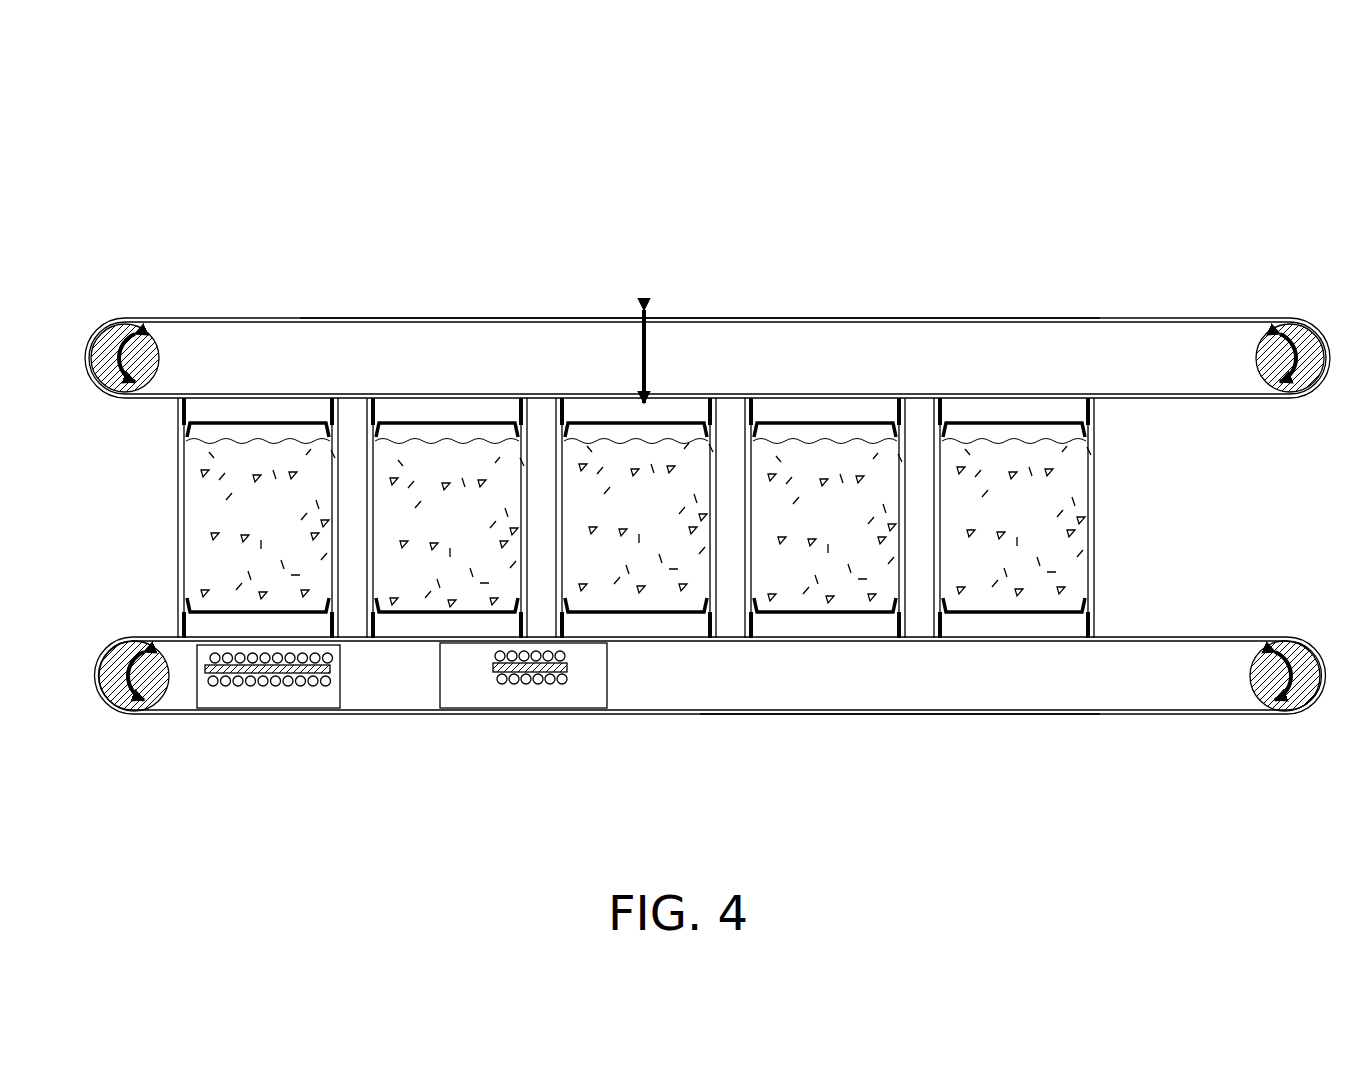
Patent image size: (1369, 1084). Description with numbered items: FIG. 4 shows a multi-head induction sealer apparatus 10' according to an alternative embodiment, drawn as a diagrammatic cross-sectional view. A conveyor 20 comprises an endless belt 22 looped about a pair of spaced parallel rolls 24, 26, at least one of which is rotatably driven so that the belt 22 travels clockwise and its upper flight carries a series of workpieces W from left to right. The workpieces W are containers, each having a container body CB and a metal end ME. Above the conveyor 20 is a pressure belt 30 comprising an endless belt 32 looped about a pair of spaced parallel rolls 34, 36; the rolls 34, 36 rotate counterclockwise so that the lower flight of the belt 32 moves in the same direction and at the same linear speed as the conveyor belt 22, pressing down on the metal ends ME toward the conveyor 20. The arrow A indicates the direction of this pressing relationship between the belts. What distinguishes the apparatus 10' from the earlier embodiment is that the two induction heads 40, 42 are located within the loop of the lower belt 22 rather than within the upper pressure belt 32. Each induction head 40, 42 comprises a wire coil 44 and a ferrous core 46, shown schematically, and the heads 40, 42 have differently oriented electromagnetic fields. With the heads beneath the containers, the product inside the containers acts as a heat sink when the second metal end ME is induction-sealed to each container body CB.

The apparatus 10' is at (1226, 154).
The conveyor 20 is at (1097, 722).
The endless belt 22 is at (900, 710).
The roll 24 is at (143, 687).
The roll 26 is at (1265, 677).
The pressure belt 30 is at (1230, 300).
The endless belt 32 is at (848, 320).
The roll 34 is at (133, 348).
The roll 36 is at (1270, 352).
The induction head 40 is at (434, 719).
The induction head 42 is at (485, 698).
The wire coil 44 is at (298, 682).
The ferrous core 46 is at (328, 668).
The direction of belt movement A is at (641, 372).
The workpieces W is at (208, 502).
The metal end ME is at (1028, 423).
The container body CB is at (1092, 572).